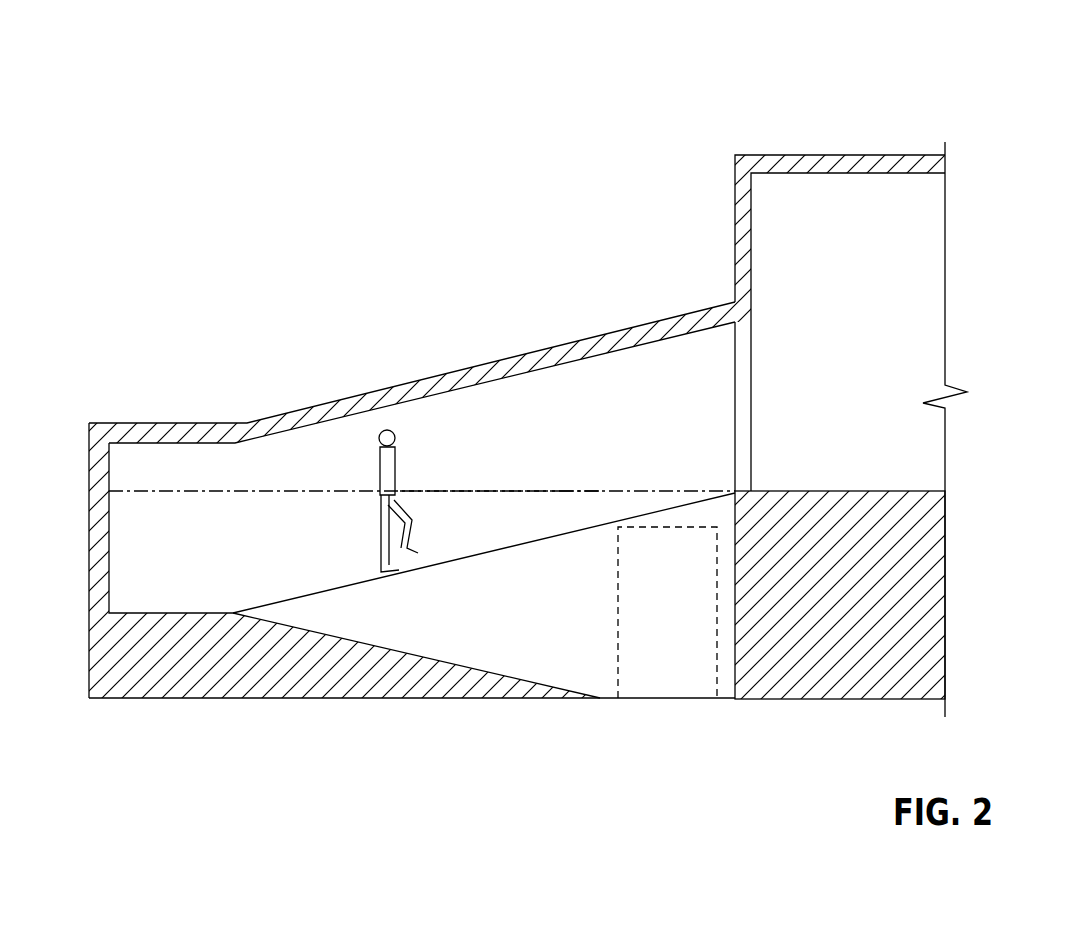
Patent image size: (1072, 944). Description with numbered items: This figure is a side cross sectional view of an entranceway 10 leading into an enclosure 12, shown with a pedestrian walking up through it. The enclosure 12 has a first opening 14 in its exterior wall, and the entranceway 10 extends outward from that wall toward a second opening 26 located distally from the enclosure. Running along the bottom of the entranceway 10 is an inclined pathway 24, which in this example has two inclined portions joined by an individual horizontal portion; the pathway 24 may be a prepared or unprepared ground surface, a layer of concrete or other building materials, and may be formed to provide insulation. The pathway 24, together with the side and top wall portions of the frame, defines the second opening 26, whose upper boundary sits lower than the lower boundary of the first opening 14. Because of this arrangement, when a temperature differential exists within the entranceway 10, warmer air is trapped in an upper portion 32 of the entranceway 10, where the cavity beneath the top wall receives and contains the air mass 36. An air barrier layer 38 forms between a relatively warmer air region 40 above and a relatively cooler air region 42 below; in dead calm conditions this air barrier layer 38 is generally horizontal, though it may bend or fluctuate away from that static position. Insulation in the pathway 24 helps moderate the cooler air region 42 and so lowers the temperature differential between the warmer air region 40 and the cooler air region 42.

The entranceway 10 is at (496, 284).
The enclosure 12 is at (886, 128).
The first opening 14 is at (780, 354).
The inclined pathway 24 is at (301, 596).
The second opening 26 is at (663, 696).
The upper portion 32 is at (693, 357).
The air mass 36 is at (243, 488).
The air barrier layer 38 is at (573, 490).
The relatively warmer air region 40 is at (528, 474).
The relatively cooler air region 42 is at (167, 560).